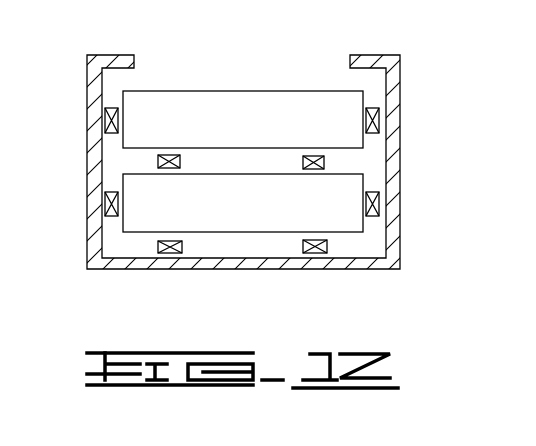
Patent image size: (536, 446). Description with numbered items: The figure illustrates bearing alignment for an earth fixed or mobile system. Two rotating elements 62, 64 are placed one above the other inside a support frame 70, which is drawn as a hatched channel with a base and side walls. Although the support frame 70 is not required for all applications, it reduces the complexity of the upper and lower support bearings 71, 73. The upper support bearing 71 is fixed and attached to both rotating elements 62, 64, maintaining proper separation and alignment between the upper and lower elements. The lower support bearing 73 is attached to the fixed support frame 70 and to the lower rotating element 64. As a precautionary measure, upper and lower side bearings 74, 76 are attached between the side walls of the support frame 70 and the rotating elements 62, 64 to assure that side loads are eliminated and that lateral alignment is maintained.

The support frame 70 is at (87, 60).
The rotating element 62 is at (290, 100).
The rotating element 64 is at (270, 225).
The upper side bearing 74 is at (105, 120).
The lower side bearing 76 is at (105, 203).
The upper support bearing 71 is at (180, 162).
The lower support bearing 73 is at (158, 247).